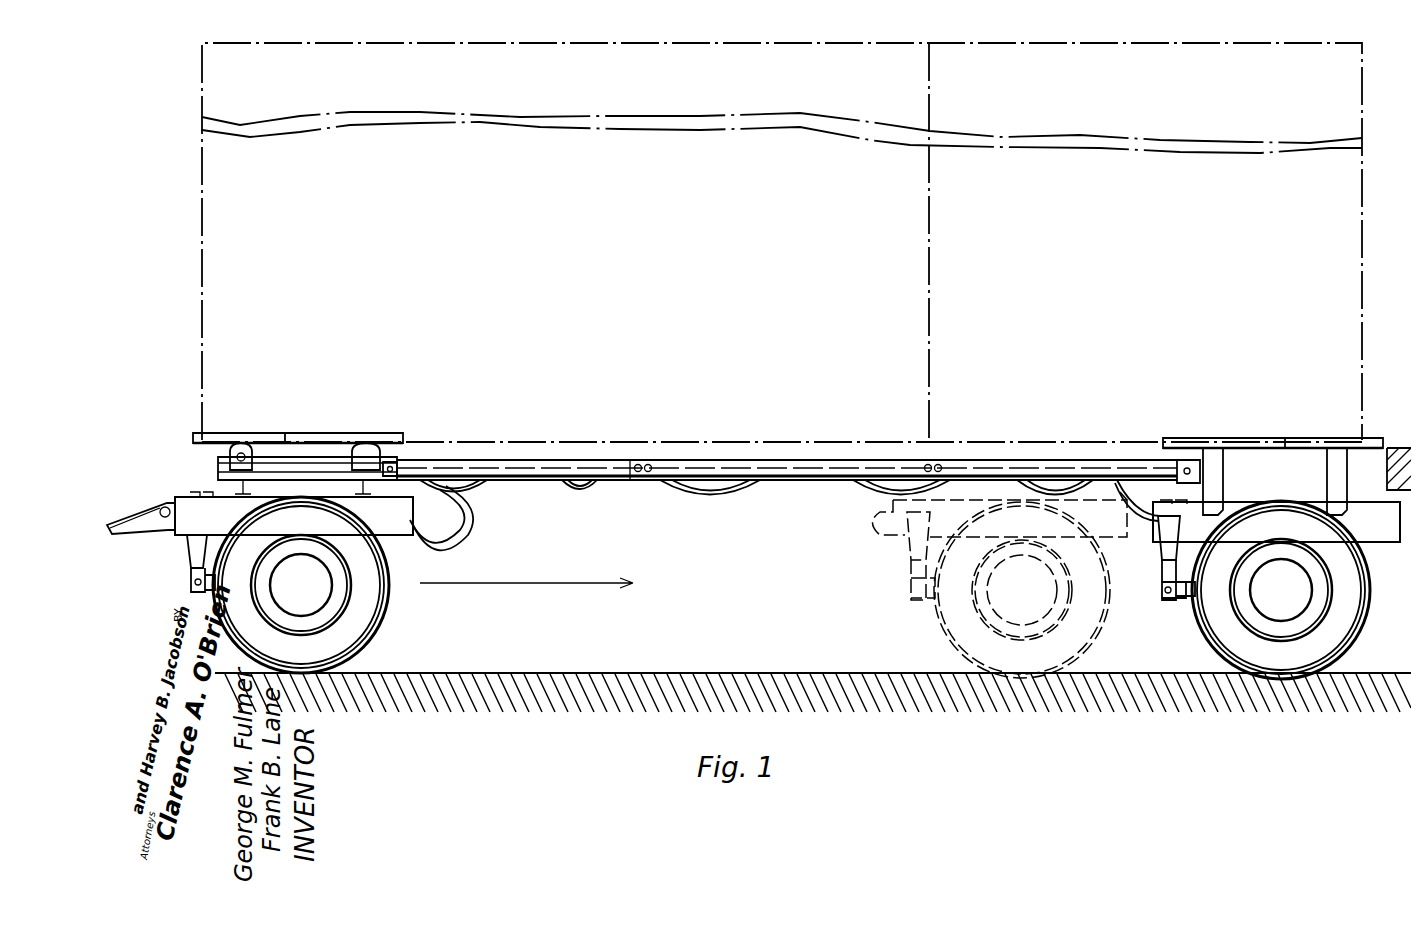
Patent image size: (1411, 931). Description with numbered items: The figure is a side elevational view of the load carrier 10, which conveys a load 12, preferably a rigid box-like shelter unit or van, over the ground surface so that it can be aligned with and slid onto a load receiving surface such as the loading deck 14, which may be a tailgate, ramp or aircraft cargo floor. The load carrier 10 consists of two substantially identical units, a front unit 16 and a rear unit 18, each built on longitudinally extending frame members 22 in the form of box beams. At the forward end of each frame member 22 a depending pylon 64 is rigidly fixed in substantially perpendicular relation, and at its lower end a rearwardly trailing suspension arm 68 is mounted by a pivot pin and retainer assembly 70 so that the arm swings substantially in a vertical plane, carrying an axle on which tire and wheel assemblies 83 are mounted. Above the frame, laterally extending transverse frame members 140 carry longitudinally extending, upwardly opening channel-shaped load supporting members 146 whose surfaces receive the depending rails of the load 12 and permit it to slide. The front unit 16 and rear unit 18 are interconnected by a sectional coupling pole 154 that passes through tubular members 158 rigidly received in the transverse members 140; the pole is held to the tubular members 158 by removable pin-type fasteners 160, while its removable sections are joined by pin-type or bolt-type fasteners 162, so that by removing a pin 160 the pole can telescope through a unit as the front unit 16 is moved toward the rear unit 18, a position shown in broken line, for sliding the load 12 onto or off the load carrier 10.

The load carrier 10 is at (160, 457).
The load 12 is at (195, 213).
The loading deck 14 is at (659, 672).
The front unit 16 is at (417, 614).
The rear unit 18 is at (1198, 662).
The longitudinal frame member 22 is at (400, 520).
The depending pylon 64 is at (1165, 530).
The suspension arm 68 is at (1188, 598).
The pivot pin and retainer assembly 70 is at (1163, 588).
The tire and wheel assembly 83 is at (350, 625).
The transverse frame member 140 is at (365, 452).
The channel-shaped load supporting member 146 is at (215, 436).
The coupling pole 154 is at (810, 470).
The tubular member 158 is at (315, 465).
The pin-type fastener 160 is at (400, 462).
The pin-type or bolt-type fastener 162 is at (648, 465).